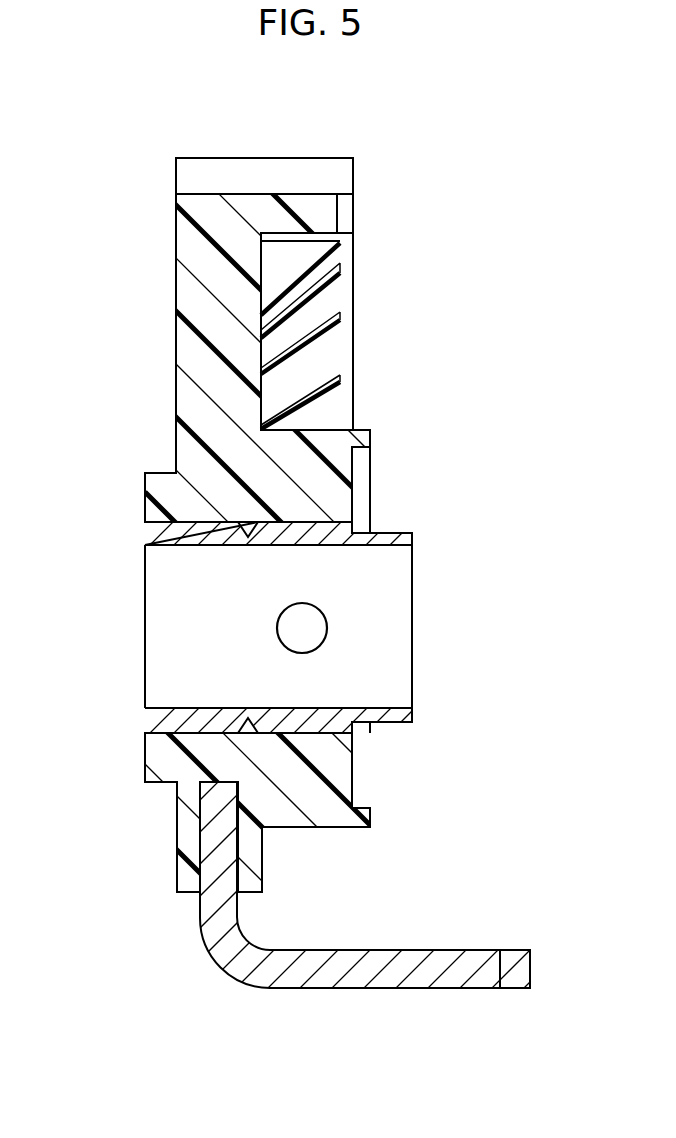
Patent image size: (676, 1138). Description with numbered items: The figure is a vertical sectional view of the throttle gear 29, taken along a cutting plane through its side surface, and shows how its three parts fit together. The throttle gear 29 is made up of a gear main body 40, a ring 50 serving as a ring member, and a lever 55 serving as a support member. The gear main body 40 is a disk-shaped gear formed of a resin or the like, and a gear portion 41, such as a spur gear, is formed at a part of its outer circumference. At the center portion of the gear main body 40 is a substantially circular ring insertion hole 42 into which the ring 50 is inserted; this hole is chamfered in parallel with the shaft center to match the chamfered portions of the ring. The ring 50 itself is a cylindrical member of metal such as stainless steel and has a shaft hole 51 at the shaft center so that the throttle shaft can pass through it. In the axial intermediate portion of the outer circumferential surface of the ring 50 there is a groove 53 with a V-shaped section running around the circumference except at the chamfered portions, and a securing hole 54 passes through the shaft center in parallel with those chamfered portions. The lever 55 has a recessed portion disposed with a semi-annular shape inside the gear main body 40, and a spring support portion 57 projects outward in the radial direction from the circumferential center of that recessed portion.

The throttle gear 29 is at (421, 225).
The gear main body 40 is at (176, 282).
The gear portion 41 is at (307, 158).
The ring insertion hole 42 is at (198, 523).
The ring 50 is at (414, 535).
The shaft hole 51 is at (355, 708).
The groove 53 is at (248, 535).
The securing hole 54 is at (312, 628).
The lever 55 is at (210, 973).
The spring support portion 57 is at (473, 988).